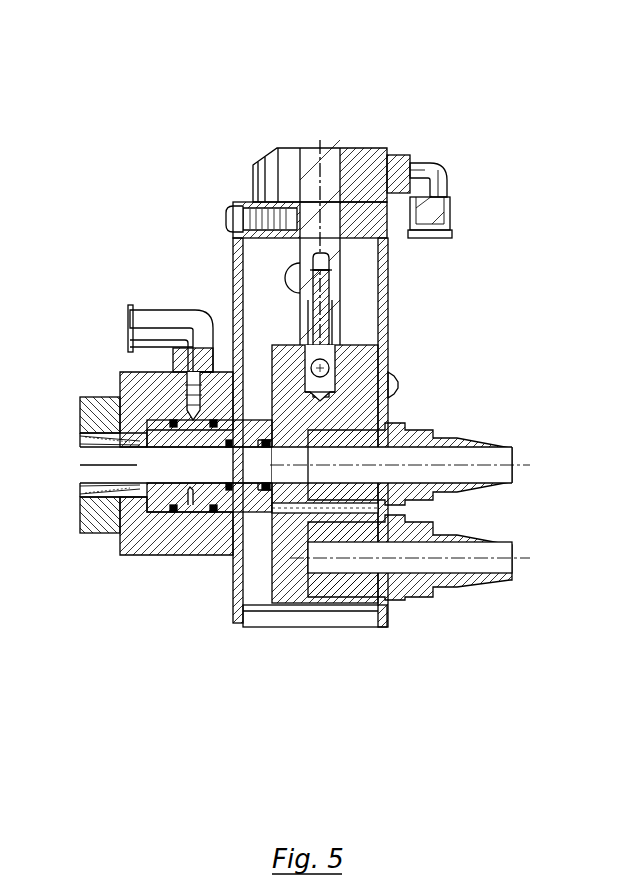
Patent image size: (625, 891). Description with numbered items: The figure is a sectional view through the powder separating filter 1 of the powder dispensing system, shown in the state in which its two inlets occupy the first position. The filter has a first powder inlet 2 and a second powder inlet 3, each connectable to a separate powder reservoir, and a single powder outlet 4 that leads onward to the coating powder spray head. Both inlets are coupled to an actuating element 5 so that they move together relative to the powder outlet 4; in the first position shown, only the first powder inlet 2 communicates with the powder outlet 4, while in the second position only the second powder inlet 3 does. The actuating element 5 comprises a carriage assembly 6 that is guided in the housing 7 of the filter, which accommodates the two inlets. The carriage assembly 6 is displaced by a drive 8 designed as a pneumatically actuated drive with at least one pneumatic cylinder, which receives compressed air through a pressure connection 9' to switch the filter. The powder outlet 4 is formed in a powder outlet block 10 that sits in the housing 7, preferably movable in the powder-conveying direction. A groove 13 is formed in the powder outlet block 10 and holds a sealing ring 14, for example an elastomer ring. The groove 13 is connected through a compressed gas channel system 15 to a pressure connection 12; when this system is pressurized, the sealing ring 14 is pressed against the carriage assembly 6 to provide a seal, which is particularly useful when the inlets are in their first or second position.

The powder separating filter 1 is at (491, 76).
The first powder inlet 2 is at (496, 472).
The second powder inlet 3 is at (472, 570).
The powder outlet 4 is at (88, 500).
The actuating element 5 is at (283, 262).
The carriage assembly 6 is at (290, 517).
The housing 7 is at (135, 387).
The drive 8 is at (357, 165).
The pressure connection 9' is at (444, 251).
The powder outlet block 10 is at (157, 498).
The pressure connection 12 is at (150, 333).
The groove 13 is at (265, 490).
The sealing ring 14 is at (266, 441).
The compressed gas channel system 15 is at (190, 502).